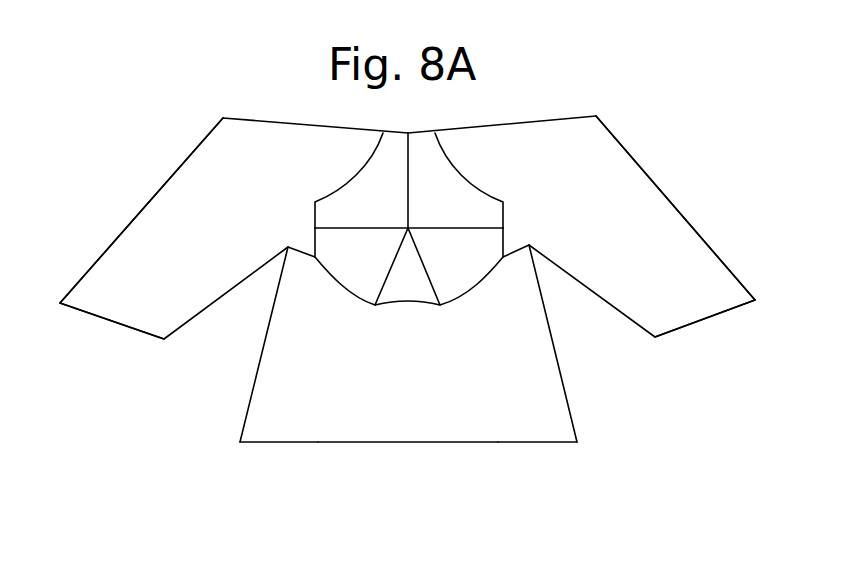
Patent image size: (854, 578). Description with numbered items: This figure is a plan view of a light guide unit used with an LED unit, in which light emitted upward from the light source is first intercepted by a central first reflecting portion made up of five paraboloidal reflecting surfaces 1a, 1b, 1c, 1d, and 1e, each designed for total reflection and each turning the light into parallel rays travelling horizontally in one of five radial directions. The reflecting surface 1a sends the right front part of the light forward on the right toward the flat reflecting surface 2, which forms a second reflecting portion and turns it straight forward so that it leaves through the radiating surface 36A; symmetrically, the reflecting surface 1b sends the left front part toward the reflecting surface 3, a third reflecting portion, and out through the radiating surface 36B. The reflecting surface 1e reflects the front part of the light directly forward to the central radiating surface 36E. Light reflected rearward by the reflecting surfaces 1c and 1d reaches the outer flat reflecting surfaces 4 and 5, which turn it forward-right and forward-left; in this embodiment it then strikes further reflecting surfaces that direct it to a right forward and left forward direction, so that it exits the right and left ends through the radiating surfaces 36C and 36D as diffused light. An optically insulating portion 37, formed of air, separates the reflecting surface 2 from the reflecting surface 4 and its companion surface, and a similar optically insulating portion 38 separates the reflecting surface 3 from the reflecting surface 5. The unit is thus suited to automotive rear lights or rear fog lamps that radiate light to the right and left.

The reflecting surface 1a is at (466, 266).
The reflecting surface 1b is at (354, 266).
The reflecting surface 1c is at (463, 217).
The reflecting surface 1d is at (400, 217).
The reflecting surface 1e is at (407, 268).
The reflecting surface 2 is at (548, 377).
The reflecting surface 3 is at (268, 378).
The reflecting surface 4 is at (502, 123).
The reflecting surface 5 is at (313, 127).
The radiating surface 36A is at (577, 457).
The radiating surface 36B is at (318, 457).
The radiating surface 36C is at (702, 322).
The radiating surface 36D is at (113, 325).
The radiating surface 36E is at (442, 457).
The optically insulating portion 37 is at (588, 329).
The optically insulating portion 38 is at (278, 330).